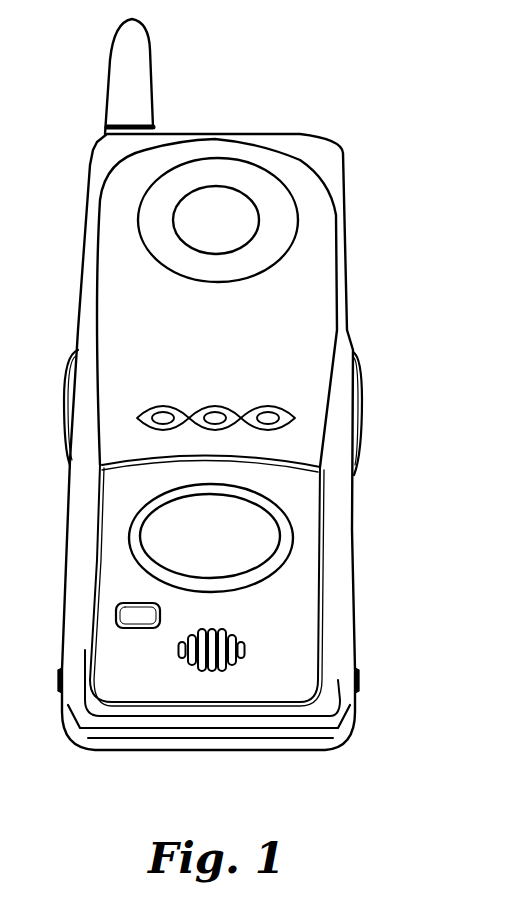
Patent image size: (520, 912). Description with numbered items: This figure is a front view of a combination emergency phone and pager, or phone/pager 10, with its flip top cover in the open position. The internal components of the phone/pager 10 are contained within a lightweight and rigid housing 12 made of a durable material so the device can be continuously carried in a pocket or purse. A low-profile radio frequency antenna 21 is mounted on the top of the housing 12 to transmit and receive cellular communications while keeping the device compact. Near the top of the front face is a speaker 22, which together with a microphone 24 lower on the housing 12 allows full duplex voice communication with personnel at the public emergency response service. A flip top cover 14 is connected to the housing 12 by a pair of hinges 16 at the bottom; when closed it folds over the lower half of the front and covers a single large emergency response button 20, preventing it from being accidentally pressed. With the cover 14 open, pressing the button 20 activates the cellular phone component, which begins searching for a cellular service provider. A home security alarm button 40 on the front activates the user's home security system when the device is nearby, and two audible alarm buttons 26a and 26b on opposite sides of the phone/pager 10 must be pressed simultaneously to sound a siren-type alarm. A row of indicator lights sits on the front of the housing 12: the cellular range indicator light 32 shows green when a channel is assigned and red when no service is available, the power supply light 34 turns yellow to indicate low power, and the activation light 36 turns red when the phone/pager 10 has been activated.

The phone/pager 10 is at (368, 107).
The housing 12 is at (88, 242).
The flip top cover 14 is at (137, 752).
The hinges 16 is at (60, 688).
The emergency response button 20 is at (295, 544).
The radio frequency antenna 21 is at (150, 82).
The speaker 22 is at (262, 222).
The microphone 24 is at (247, 648).
The audible alarm button 26a is at (62, 407).
The audible alarm button 26b is at (363, 400).
The cellular range indicator light 32 is at (272, 412).
The power supply light 34 is at (219, 410).
The activation light 36 is at (164, 410).
The home security alarm button 40 is at (116, 617).